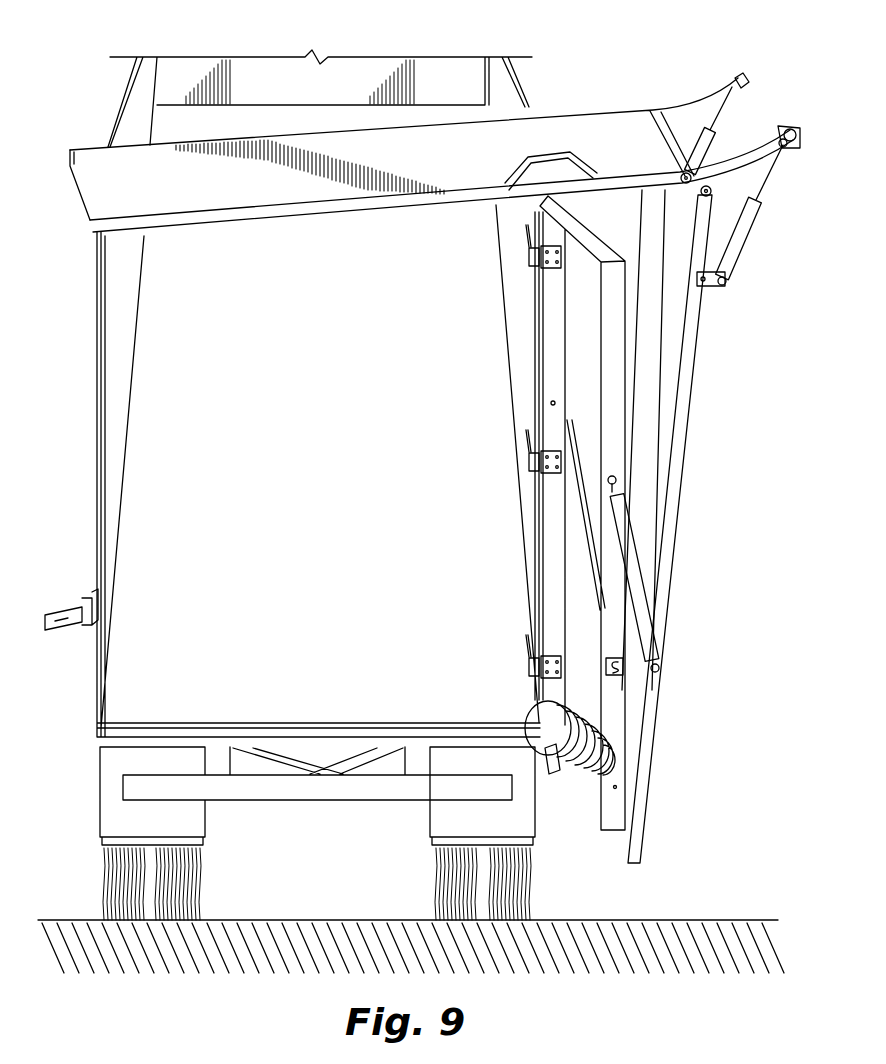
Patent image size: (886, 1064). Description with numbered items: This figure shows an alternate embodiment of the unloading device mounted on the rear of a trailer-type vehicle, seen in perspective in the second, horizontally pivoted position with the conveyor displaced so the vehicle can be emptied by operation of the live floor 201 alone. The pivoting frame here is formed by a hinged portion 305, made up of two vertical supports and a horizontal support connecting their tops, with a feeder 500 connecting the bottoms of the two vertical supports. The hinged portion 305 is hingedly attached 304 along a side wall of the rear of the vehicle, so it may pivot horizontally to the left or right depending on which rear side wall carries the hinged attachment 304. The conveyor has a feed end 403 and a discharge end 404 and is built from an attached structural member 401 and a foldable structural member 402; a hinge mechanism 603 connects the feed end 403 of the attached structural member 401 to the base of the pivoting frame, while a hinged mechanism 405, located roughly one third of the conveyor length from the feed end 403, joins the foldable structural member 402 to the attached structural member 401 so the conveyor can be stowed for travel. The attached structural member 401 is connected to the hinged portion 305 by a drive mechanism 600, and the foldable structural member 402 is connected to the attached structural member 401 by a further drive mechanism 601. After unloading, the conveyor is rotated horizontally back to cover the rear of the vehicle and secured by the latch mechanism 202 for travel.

The live floor 201 is at (341, 405).
The latch mechanism 202 is at (59, 606).
The hinged attachment 304 is at (530, 254).
The hinged portion 305 is at (600, 245).
The attached structural member 401 is at (686, 292).
The foldable structural member 402 is at (422, 137).
The feed end 403 is at (677, 819).
The discharge end 404 is at (89, 129).
The hinged mechanism 405 is at (711, 193).
The feeder 500 is at (598, 795).
The drive mechanism 600 is at (633, 570).
The drive mechanism 601 is at (718, 135).
The hinge mechanism 603 is at (553, 762).